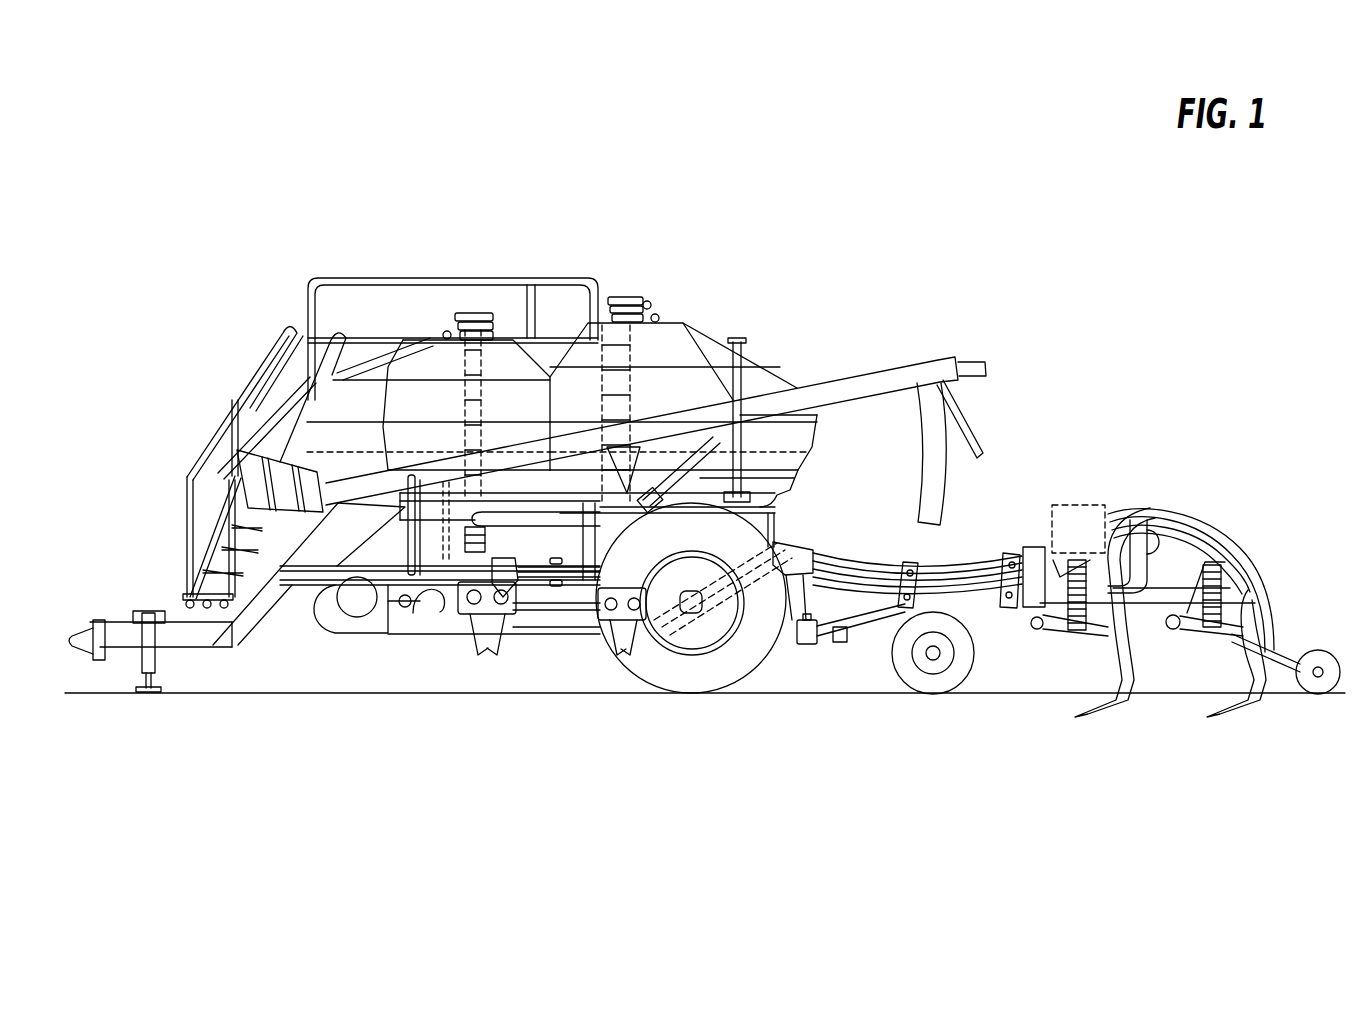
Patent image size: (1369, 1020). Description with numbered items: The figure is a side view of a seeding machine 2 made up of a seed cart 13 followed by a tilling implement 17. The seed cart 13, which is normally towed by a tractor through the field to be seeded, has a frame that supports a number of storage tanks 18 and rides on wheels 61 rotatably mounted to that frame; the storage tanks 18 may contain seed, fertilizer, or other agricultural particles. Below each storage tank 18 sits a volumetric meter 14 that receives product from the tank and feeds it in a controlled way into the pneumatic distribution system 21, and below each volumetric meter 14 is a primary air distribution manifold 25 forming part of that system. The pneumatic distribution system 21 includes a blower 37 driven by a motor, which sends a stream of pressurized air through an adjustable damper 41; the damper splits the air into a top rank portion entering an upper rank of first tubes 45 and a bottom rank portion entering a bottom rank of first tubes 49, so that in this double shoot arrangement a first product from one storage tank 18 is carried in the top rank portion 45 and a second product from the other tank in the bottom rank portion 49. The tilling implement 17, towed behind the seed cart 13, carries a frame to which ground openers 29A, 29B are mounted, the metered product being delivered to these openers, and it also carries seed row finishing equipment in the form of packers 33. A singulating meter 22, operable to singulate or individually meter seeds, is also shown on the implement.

The seeding machine 2 is at (995, 328).
The seed cart 13 is at (812, 366).
The tilling implement 17 is at (1205, 438).
The storage tanks 18 is at (446, 412).
The singulating meter 22 is at (1092, 542).
The packers 33 is at (1318, 650).
The blower 37 is at (318, 606).
The adjustable damper 41 is at (400, 635).
The upper rank of first tubes 45 is at (420, 597).
The bottom rank of first tubes 49 is at (455, 607).
The primary air distribution manifold 25 is at (445, 612).
The volumetric meter 14 is at (603, 592).
The wheels 61 is at (728, 678).
The pneumatic distribution system 21 is at (310, 651).
The ground opener 29A is at (1092, 708).
The ground opener 29B is at (1227, 708).